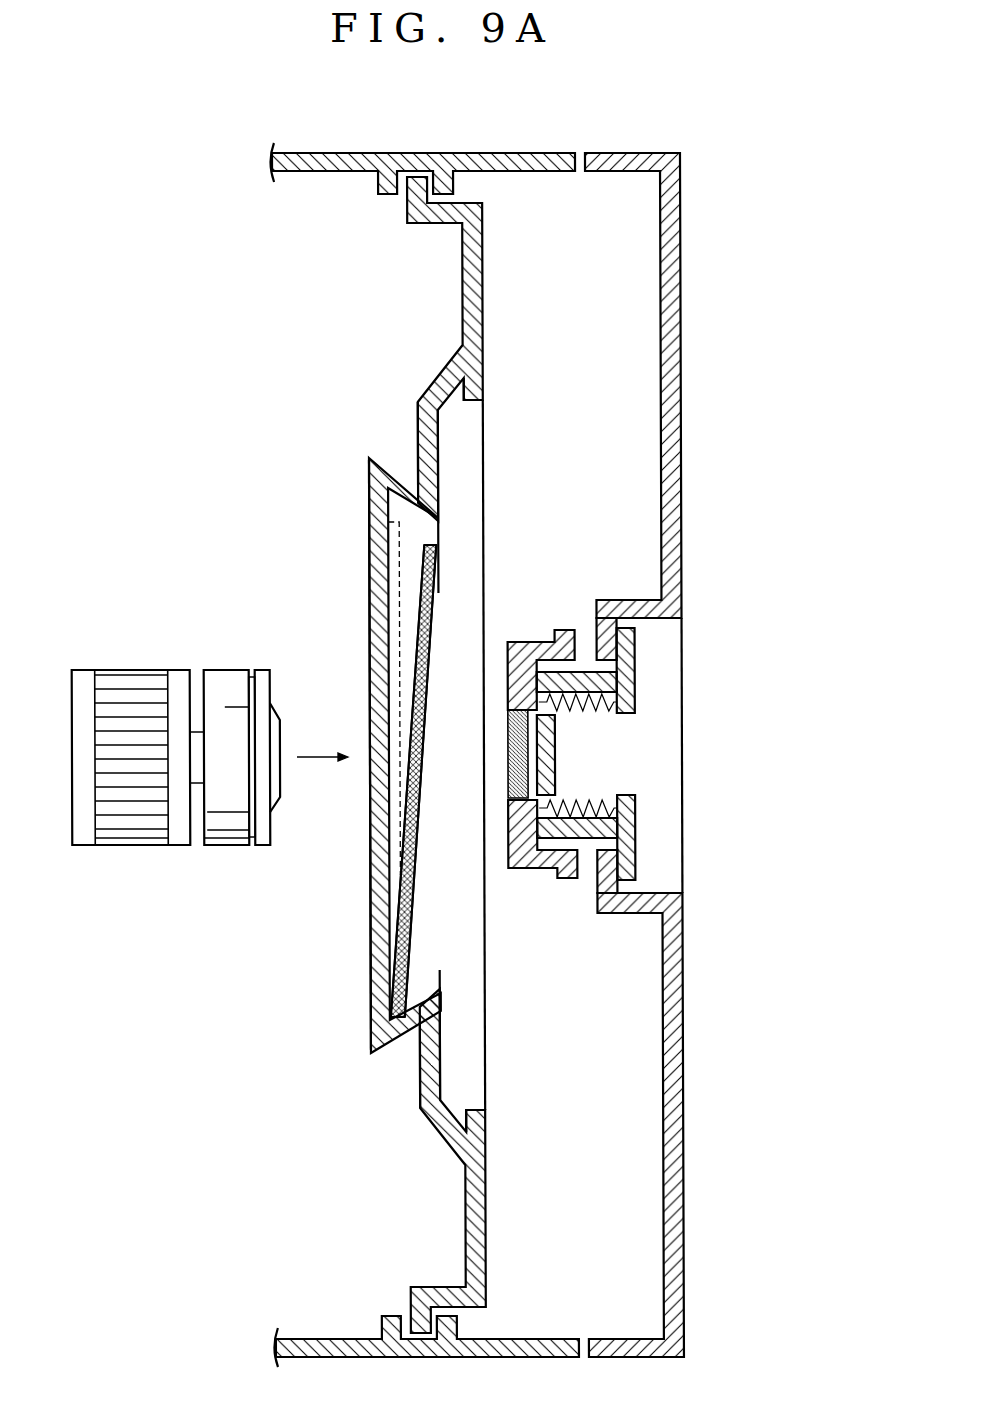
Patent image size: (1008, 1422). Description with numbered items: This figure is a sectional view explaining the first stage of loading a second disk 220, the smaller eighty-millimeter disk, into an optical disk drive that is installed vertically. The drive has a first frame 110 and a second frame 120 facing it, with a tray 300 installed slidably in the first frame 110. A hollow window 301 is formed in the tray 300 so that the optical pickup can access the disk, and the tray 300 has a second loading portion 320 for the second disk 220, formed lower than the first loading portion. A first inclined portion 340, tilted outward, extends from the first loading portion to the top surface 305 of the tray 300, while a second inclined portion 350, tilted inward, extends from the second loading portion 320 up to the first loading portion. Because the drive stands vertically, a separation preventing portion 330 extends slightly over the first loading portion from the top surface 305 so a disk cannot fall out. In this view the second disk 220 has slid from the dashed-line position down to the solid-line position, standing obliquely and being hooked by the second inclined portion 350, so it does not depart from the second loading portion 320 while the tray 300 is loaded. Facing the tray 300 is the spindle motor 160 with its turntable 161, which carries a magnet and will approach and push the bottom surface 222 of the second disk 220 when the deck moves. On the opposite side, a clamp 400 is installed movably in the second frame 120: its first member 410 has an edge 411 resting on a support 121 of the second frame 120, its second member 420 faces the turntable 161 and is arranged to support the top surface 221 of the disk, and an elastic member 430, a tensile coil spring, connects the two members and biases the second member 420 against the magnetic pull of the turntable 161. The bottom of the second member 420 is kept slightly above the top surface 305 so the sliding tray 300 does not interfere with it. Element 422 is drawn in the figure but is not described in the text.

The first frame 110 is at (427, 163).
The second frame 120 is at (682, 378).
The support 121 is at (606, 633).
The tray 300 is at (418, 755).
The hollow window 301 is at (378, 863).
The top surface of the tray 305 is at (483, 285).
The second loading portion 320 is at (400, 569).
The separation preventing portion 330 is at (482, 388).
The first inclined portion 340 is at (445, 402).
The second inclined portion 350 is at (410, 507).
The second disk 220 is at (390, 922).
The top surface of the second disk 221 is at (410, 903).
The bottom surface of the second disk 222 is at (395, 922).
The clamp 400 is at (569, 784).
The first member 410 is at (633, 847).
The edge of the first member 411 is at (636, 644).
The second member 420 is at (565, 882).
The pressing block 422 is at (506, 652).
The elastic member 430 is at (597, 796).
The spindle motor 160 is at (130, 830).
The turntable 161 is at (223, 830).